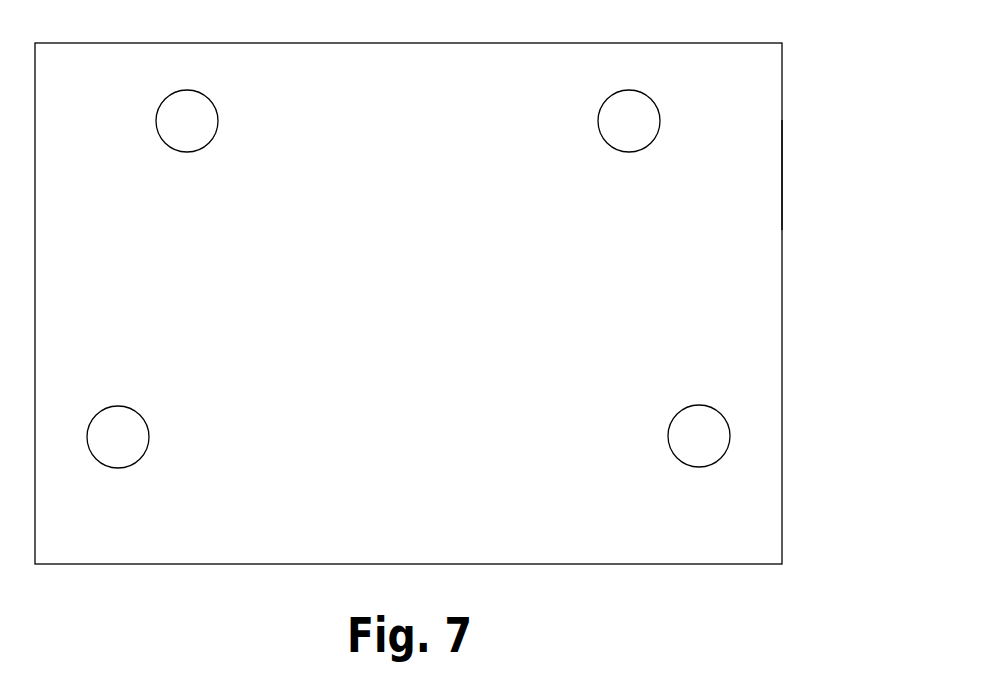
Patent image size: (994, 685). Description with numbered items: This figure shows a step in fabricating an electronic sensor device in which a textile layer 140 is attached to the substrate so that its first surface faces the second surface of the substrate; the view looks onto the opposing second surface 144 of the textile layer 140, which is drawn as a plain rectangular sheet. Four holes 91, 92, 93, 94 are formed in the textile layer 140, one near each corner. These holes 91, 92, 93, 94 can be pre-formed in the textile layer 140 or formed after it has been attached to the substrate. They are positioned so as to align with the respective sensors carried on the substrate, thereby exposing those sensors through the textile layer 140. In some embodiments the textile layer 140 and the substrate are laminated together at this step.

The textile layer 140 is at (782, 249).
The second surface 144 is at (753, 175).
The hole 91 is at (184, 100).
The hole 92 is at (632, 102).
The hole 93 is at (707, 417).
The hole 94 is at (110, 417).